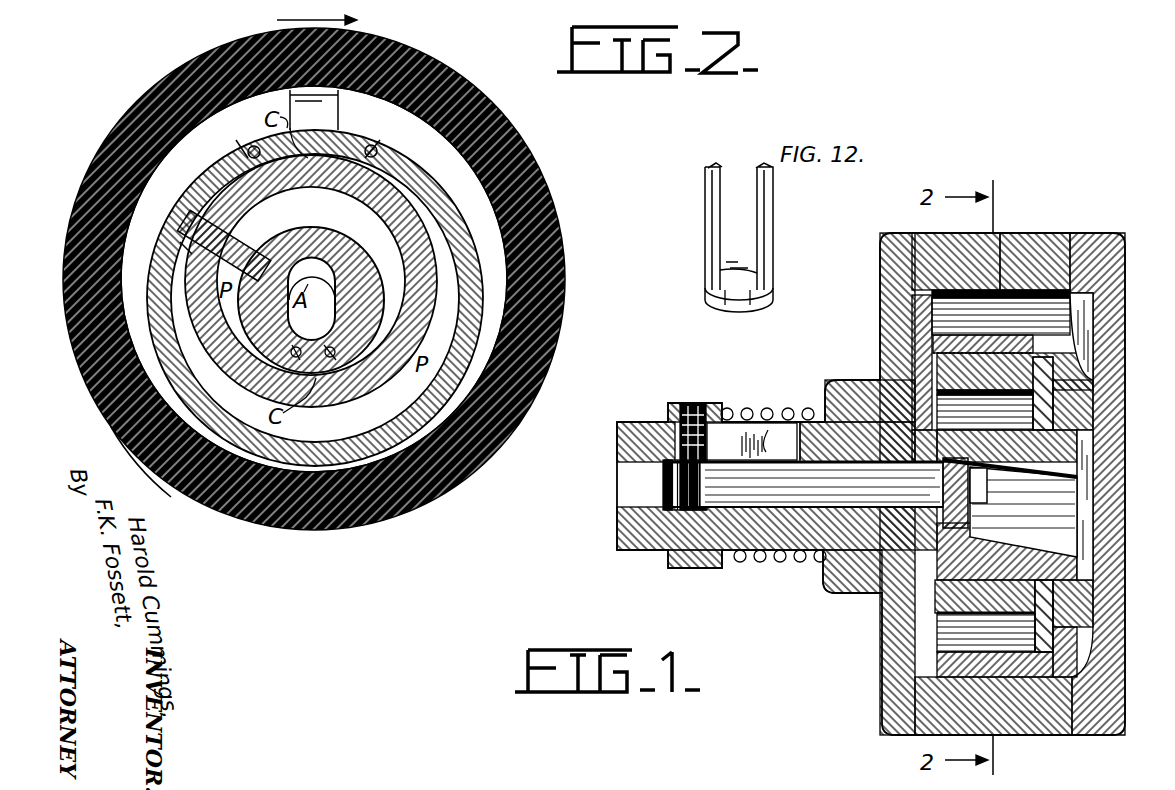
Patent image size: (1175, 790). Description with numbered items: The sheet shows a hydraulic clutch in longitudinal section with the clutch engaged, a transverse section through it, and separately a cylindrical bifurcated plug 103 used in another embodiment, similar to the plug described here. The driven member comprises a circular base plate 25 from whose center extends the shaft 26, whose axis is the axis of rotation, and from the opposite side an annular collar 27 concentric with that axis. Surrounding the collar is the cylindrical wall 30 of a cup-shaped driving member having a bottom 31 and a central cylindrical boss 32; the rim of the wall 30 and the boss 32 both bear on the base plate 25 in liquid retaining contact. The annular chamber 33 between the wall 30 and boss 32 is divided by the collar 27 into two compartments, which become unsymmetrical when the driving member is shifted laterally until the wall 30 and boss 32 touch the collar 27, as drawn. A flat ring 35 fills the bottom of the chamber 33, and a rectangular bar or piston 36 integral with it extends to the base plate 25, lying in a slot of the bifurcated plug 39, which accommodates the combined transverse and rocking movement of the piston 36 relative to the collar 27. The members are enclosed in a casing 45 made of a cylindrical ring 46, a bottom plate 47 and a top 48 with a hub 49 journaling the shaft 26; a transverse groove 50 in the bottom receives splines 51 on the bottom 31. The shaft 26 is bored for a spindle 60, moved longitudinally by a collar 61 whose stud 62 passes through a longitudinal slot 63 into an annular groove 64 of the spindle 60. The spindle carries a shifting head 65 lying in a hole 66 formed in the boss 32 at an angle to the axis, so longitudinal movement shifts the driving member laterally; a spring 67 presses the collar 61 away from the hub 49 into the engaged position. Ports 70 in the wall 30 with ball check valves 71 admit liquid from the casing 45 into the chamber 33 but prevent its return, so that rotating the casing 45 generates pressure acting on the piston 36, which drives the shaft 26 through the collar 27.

In FIG. 1, the base plate 25 is at (920, 347).
In FIG. 1, the shaft 26 is at (864, 533).
In FIG. 2, the annular collar 27 is at (372, 378).
In FIG. 1, the annular collar 27 is at (1023, 598).
In FIG. 2, the cylindrical wall 30 is at (404, 166).
In FIG. 1, the cylindrical wall 30 is at (1010, 310).
In FIG. 1, the bottom 31 is at (1060, 402).
In FIG. 2, the cylindrical boss 32 is at (325, 232).
In FIG. 1, the cylindrical boss 32 is at (997, 446).
In FIG. 2, the chamber 33 is at (111, 427).
In FIG. 1, the chamber 33 is at (940, 622).
In FIG. 1, the flat ring 35 is at (1050, 625).
In FIG. 2, the piston 36 is at (246, 248).
In FIG. 2, the bifurcated plug 39 is at (186, 248).
In FIG. 2, the casing 45 is at (538, 163).
In FIG. 1, the casing 45 is at (1043, 285).
In FIG. 2, the cylindrical ring 46 is at (560, 206).
In FIG. 1, the cylindrical ring 46 is at (957, 243).
In FIG. 1, the bottom plate 47 is at (1125, 262).
In FIG. 1, the top 48 is at (882, 278).
In FIG. 1, the hub 49 is at (840, 572).
In FIG. 2, the transverse groove 50 is at (324, 120).
In FIG. 1, the transverse groove 50 is at (1083, 345).
In FIG. 1, the splines 51 is at (1083, 418).
In FIG. 1, the spindle 60 is at (756, 562).
In FIG. 1, the collar 61 is at (678, 566).
In FIG. 1, the stud 62 is at (722, 424).
In FIG. 1, the longitudinal slot 63 is at (770, 428).
In FIG. 1, the annular groove 64 is at (680, 478).
In FIG. 1, the shifting head 65 is at (987, 500).
In FIG. 1, the hole 66 is at (1060, 530).
In FIG. 1, the spring 67 is at (783, 490).
In FIG. 2, the ports 70 is at (258, 147).
In FIG. 2, the ball check valves 71 is at (248, 150).
In FIG. 12, the bifurcated plug 103 is at (772, 282).